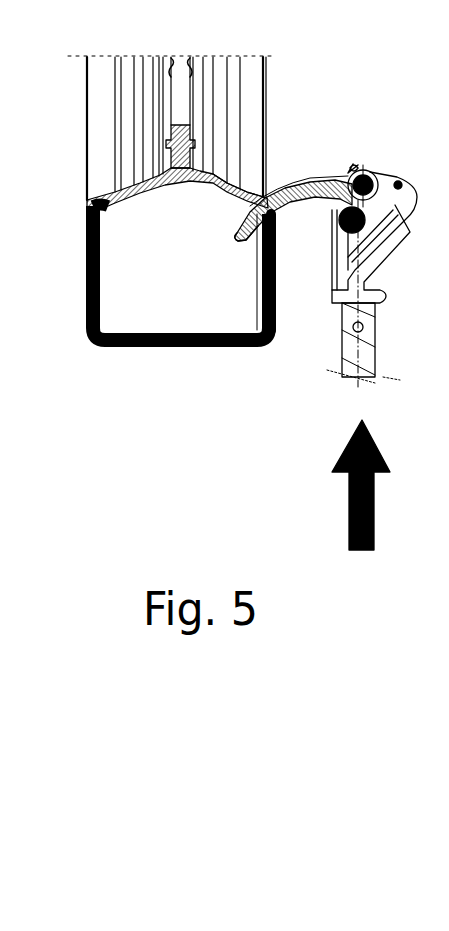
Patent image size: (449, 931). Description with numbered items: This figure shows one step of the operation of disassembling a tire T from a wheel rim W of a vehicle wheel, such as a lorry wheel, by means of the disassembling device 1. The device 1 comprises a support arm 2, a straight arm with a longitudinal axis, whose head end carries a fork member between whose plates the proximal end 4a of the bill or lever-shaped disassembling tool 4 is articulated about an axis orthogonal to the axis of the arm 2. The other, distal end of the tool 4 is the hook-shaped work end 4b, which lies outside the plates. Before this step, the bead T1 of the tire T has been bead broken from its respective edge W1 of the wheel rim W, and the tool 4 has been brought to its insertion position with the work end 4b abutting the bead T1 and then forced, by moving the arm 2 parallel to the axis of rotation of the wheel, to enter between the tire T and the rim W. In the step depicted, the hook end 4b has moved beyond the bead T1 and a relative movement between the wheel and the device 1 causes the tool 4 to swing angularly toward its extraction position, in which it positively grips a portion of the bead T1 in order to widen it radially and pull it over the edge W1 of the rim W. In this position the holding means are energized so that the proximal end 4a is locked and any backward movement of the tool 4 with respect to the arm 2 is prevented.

The wheel rim W is at (86, 125).
The edge of the wheel rim W1 is at (267, 197).
The tire T is at (190, 347).
The bead of the tire T1 is at (257, 252).
The disassembling tool 4 is at (308, 205).
The proximal end of the disassembling tool 4a is at (386, 180).
The work end of the disassembling tool 4b is at (240, 236).
The disassembling device 1 is at (377, 255).
The support arm 2 is at (340, 347).